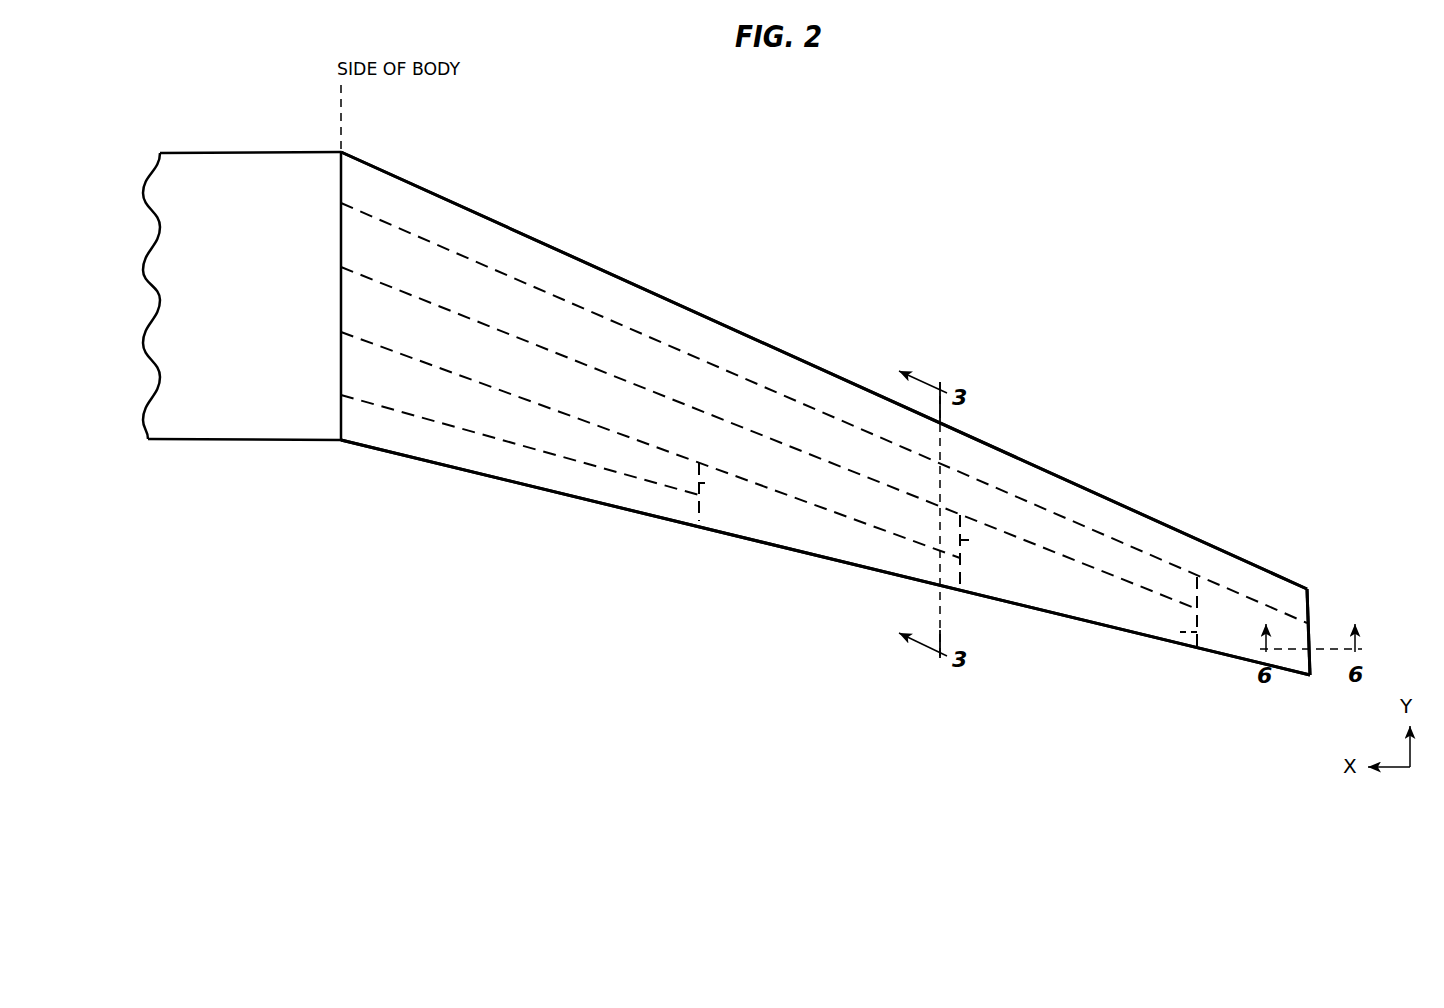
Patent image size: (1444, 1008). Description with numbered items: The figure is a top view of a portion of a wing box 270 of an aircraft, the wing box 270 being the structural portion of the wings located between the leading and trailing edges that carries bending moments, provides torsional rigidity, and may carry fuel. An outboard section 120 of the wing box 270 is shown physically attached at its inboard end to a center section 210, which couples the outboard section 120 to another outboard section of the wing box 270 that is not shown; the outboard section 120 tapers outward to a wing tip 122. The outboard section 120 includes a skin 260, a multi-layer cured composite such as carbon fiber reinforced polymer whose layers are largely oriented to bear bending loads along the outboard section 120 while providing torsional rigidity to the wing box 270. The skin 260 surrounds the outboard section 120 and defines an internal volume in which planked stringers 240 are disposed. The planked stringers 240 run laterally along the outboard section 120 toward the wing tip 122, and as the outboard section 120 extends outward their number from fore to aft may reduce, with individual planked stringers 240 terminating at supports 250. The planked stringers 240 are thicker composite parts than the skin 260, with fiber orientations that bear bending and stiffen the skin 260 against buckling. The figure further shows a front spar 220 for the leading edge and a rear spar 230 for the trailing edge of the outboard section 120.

The outboard section 120 is at (1297, 785).
The wing tip 122 is at (1316, 611).
The center section 210 is at (248, 151).
The front spar 220 is at (767, 337).
The rear spar 230 is at (758, 548).
The planked stringers 240 is at (850, 424).
The supports 250 is at (705, 483).
The skin 260 is at (433, 209).
The wing box 270 is at (1036, 301).